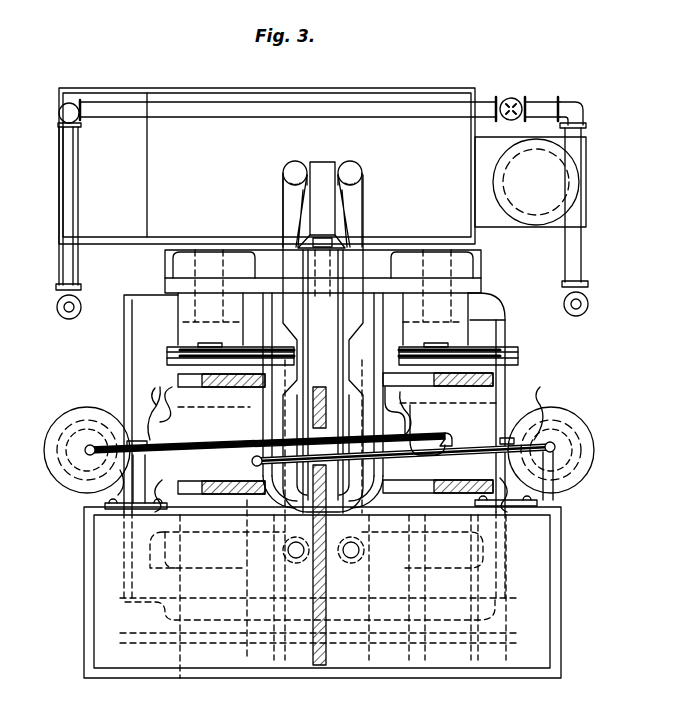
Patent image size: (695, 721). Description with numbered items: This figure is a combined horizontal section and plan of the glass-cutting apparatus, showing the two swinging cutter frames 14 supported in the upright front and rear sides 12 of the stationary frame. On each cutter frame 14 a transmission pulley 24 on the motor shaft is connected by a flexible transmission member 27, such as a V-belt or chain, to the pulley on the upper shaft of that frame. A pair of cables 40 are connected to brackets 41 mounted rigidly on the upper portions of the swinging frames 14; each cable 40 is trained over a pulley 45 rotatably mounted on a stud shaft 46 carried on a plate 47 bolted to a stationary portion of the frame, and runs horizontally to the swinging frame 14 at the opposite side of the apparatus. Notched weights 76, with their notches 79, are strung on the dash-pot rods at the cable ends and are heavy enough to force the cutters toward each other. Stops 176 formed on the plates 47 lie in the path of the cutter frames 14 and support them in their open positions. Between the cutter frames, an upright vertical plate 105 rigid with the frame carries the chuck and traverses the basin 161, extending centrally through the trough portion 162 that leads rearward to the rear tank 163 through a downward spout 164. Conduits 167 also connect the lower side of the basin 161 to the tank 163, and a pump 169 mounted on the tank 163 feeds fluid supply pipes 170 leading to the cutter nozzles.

The upright front and rear sides 12 is at (390, 250).
The swinging cutter frame 14 is at (116, 344).
The transmission pulley 24 is at (185, 350).
The flexible transmission member 27 is at (265, 247).
The cable 40 is at (390, 456).
The bracket 41 is at (250, 469).
The pulley 45 is at (130, 441).
The stud shaft 46 is at (135, 440).
The plate 47 is at (118, 510).
The weight 76 is at (50, 449).
The notch 79 is at (100, 505).
The vertical plate 105 is at (320, 668).
The basin 161 is at (92, 655).
The trough portion 162 is at (332, 366).
The rear tank 163 is at (200, 73).
The spout 164 is at (325, 166).
The conduit 167 is at (362, 190).
The pump 169 is at (547, 214).
The fluid supply pipe 170 is at (363, 108).
The stop 176 is at (165, 470).